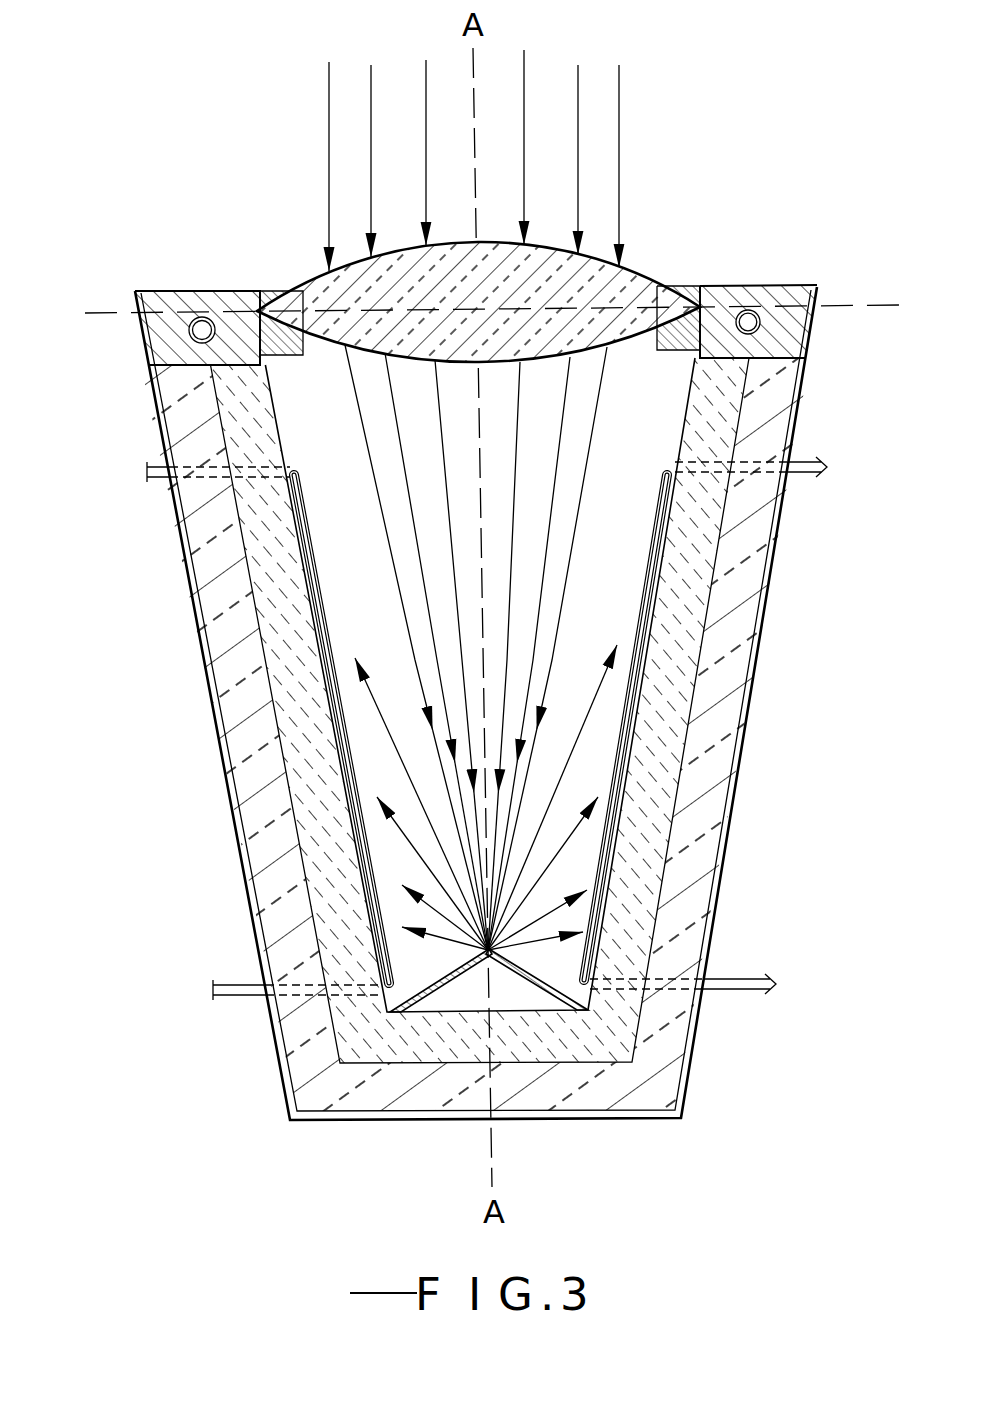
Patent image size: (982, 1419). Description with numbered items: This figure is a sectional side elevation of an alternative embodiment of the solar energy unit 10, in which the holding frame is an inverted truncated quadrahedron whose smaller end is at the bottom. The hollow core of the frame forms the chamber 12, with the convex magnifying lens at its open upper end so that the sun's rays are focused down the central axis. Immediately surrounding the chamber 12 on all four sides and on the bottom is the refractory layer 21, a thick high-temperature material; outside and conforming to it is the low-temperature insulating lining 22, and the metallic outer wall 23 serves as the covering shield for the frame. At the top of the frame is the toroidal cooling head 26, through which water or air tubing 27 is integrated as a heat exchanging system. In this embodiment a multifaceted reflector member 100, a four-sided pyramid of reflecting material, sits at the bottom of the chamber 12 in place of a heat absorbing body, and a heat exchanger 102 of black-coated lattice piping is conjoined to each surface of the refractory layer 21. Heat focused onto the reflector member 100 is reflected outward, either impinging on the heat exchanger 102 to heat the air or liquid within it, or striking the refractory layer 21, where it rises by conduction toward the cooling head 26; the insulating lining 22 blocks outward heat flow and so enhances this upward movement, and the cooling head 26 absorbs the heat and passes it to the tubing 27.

The solar energy unit 10 is at (485, 692).
The hollow chamber member 12 is at (590, 757).
The refractory layer 21 is at (287, 635).
The insulating material lining 22 is at (218, 566).
The outer wall 23 is at (218, 723).
The cooling head 26 is at (793, 295).
The water or air tubing 27 is at (746, 316).
The multifaceted reflector member 100 is at (527, 995).
The heat exchanger 102 is at (347, 797).